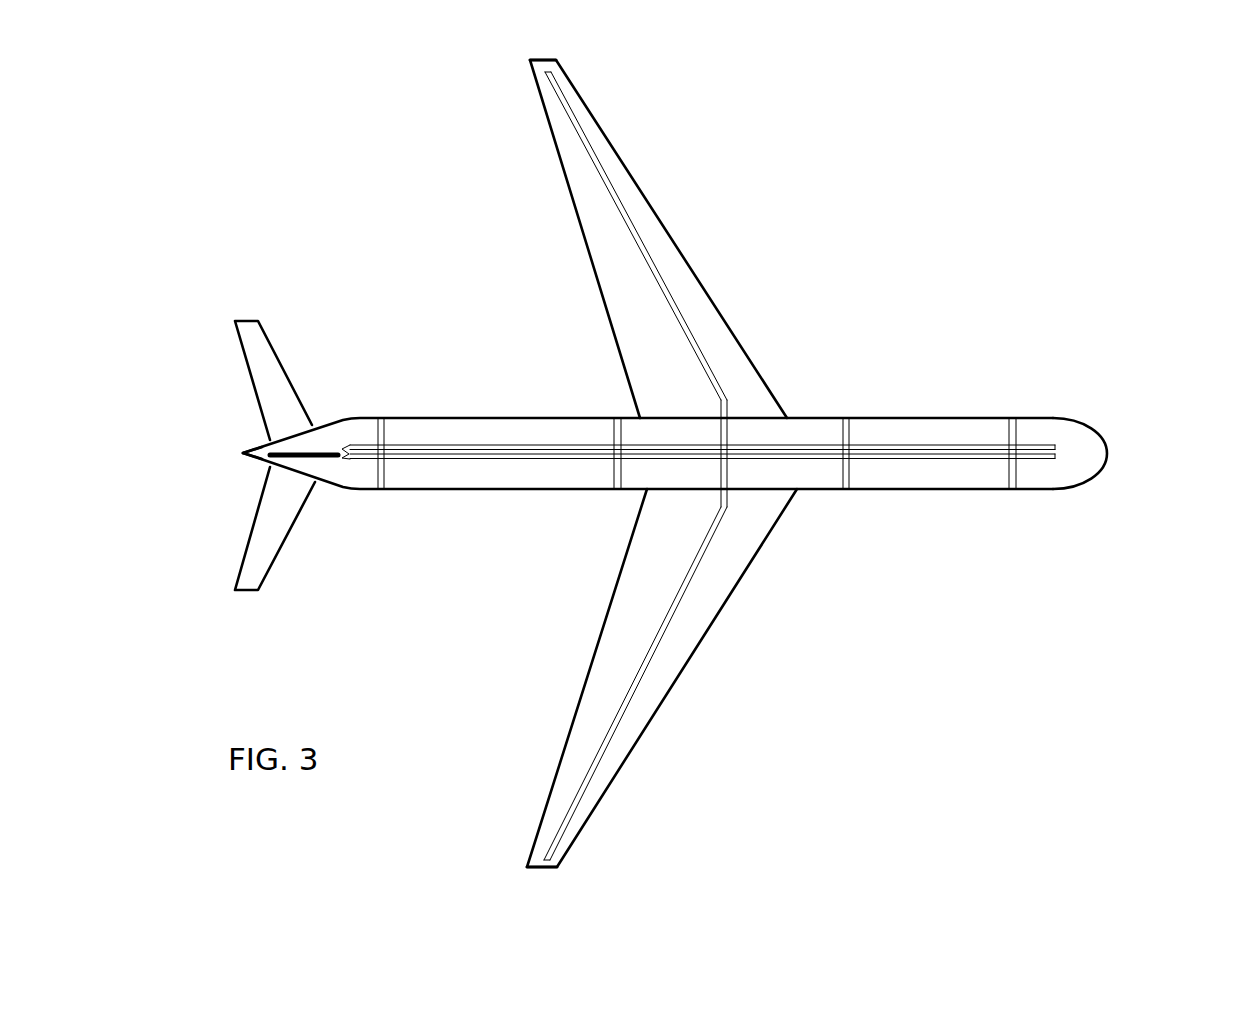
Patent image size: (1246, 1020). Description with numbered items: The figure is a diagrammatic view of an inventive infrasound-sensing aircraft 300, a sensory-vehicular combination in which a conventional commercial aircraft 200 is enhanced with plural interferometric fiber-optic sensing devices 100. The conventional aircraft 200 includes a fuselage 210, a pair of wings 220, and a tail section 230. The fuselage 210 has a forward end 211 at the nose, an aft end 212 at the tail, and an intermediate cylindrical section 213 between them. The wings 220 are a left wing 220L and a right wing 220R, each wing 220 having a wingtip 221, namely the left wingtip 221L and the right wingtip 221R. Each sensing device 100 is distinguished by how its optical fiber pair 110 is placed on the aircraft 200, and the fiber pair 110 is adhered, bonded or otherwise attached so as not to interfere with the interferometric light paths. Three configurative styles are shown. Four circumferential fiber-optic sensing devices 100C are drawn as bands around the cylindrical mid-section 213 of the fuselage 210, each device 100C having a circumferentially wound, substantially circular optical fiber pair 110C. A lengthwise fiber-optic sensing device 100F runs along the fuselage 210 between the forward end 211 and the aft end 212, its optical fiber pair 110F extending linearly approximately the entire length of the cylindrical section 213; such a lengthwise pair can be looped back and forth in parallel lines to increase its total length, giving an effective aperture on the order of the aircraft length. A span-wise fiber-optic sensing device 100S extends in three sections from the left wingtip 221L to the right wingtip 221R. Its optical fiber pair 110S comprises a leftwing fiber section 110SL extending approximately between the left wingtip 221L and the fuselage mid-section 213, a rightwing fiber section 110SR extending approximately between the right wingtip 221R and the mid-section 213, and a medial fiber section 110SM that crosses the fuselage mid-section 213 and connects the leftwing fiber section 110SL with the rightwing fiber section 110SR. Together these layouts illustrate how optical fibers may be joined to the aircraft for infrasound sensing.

The infrasound-sensing aircraft 300 is at (803, 113).
The conventional aircraft 200 is at (682, 465).
The fuselage 210 is at (698, 537).
The forward end 211 is at (1095, 453).
The aft end 212 is at (262, 461).
The intermediate cylindrical section 213 is at (885, 470).
The wings 220 is at (726, 465).
The left wing 220L is at (728, 223).
The right wing 220R is at (719, 695).
The wingtip 221 is at (542, 463).
The left wingtip 221L is at (540, 53).
The right wingtip 221R is at (542, 873).
The tail section 230 is at (275, 408).
The fiber-optic sensing device 100 is at (728, 466).
The optical fiber pair 110 is at (728, 466).
The circumferential fiber-optic sensing device 100C is at (746, 500).
The circumferential optical fiber pair 110C is at (378, 490).
The fuselage longitudinal reinforcement element 100F is at (670, 440).
The fuselage longitudinal reinforcement member 110F is at (1012, 582).
The span-wise fiber-optic sensing device 100S is at (573, 466).
The span-wise optical fiber pair 110S is at (573, 466).
The leftwing fiber section 110SL is at (635, 238).
The medial fiber section 110SM is at (725, 472).
The rightwing fiber section 110SR is at (650, 665).